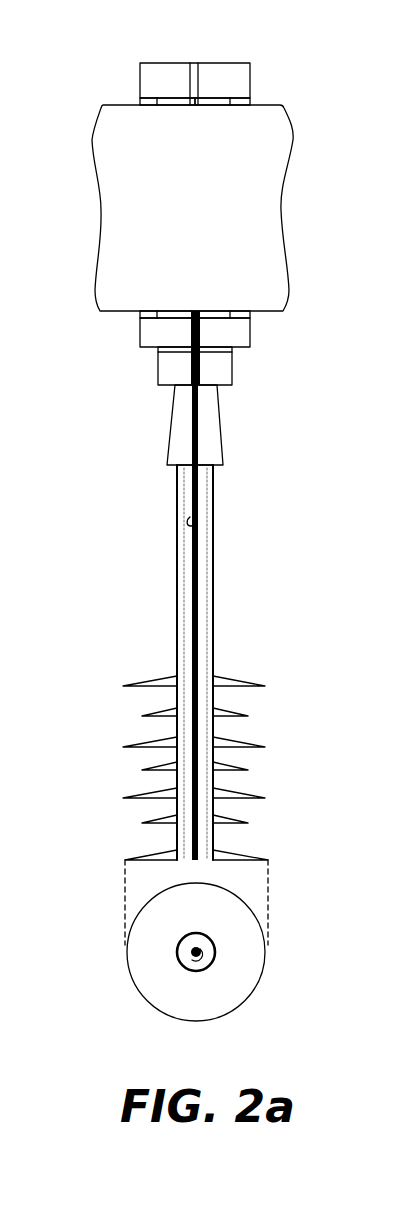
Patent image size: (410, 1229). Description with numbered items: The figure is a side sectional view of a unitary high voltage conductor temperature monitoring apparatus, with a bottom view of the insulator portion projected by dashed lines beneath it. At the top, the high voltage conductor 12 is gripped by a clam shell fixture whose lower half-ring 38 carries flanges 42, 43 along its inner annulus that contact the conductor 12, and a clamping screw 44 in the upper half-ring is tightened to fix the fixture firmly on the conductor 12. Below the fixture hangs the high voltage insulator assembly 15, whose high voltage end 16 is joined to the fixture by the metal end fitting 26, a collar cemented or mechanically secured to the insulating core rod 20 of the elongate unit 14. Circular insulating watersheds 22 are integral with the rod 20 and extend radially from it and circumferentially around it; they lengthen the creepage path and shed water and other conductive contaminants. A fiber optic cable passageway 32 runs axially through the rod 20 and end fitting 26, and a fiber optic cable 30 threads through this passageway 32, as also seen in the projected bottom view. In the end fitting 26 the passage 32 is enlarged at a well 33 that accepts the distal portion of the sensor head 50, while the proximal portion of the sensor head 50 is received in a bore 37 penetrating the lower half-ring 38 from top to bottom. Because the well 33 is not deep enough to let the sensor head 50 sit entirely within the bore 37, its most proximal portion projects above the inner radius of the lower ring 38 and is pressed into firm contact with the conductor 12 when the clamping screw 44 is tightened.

The high voltage conductor 12 is at (110, 175).
The elongate unit 14 is at (214, 636).
The high voltage insulator assembly 15 is at (140, 591).
The high voltage end 16 is at (178, 475).
The insulating core rod 20 is at (184, 553).
The circular insulating watersheds 22 is at (148, 898).
The metal end fitting 26 is at (218, 407).
The fiber optic cable 30 is at (205, 594).
The fiber optic cable passageway 32 is at (195, 516).
The well 33 is at (190, 374).
The bore 37 is at (198, 330).
The lower half-ring 38 is at (245, 338).
The flange 42 is at (141, 101).
The flange 43 is at (250, 101).
The clamping screw 44 is at (193, 63).
The sensor head 50 is at (190, 334).